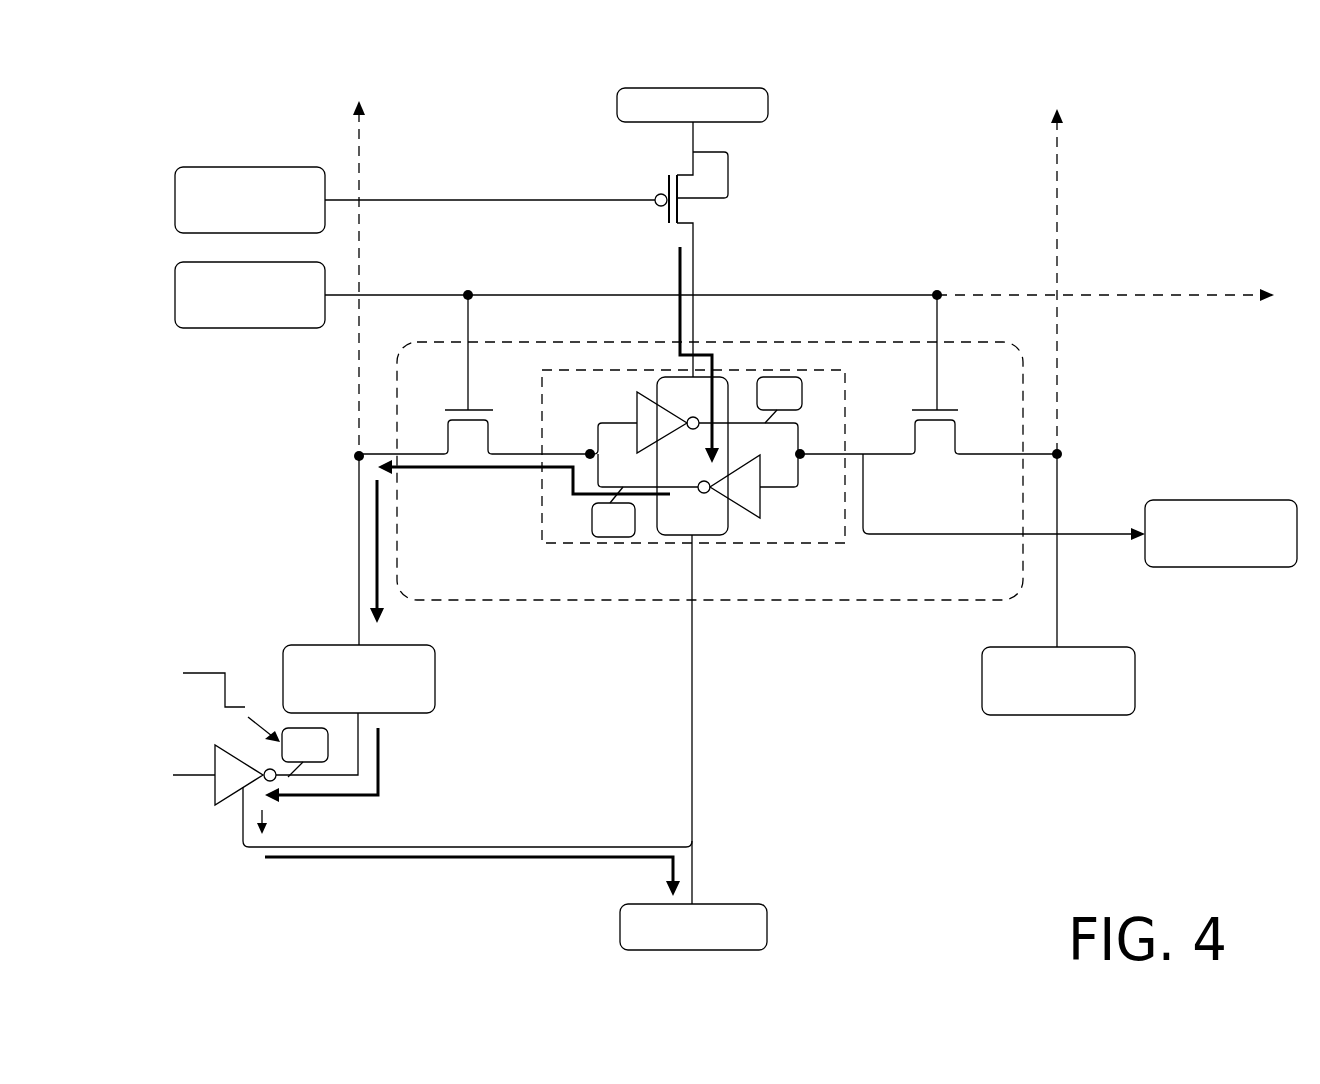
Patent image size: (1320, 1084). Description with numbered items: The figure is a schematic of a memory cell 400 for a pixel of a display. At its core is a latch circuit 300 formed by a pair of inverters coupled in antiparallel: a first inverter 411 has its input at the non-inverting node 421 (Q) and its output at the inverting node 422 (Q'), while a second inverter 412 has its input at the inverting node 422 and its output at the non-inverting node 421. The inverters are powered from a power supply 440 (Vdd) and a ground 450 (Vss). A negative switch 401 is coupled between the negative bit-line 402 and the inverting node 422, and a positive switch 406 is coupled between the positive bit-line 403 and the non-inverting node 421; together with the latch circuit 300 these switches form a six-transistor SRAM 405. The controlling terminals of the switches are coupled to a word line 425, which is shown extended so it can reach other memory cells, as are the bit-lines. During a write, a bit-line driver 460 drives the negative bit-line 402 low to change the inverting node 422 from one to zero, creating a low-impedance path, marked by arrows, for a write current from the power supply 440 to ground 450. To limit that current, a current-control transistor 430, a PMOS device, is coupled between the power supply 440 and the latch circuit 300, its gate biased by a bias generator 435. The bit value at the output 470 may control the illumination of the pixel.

The latch circuit 300 is at (580, 543).
The memory cell 400 is at (185, 88).
The negative switch 401 is at (455, 405).
The negative bit-line 402 is at (359, 552).
The positive bit-line 403 is at (1058, 587).
The six-transistor SRAM 405 is at (818, 606).
The positive switch 406 is at (950, 408).
The first inverter 411 is at (747, 512).
The second inverter 412 is at (649, 394).
The non-inverting node 421 is at (802, 434).
The inverting node 422 is at (588, 434).
The word line 425 is at (581, 294).
The current-control transistor 430 is at (628, 172).
The bias generator 435 is at (230, 167).
The power supply 440 is at (617, 105).
The ground 450 is at (767, 922).
The bit-line driver 460 is at (240, 757).
The output 470 is at (1217, 500).